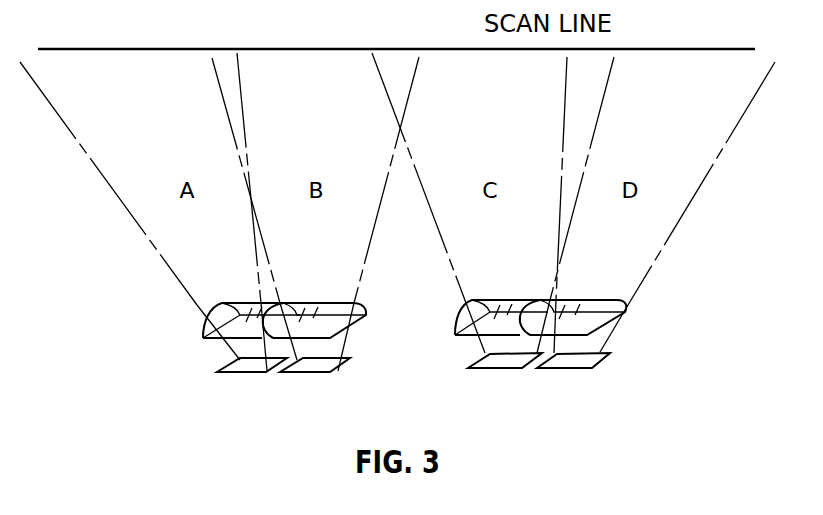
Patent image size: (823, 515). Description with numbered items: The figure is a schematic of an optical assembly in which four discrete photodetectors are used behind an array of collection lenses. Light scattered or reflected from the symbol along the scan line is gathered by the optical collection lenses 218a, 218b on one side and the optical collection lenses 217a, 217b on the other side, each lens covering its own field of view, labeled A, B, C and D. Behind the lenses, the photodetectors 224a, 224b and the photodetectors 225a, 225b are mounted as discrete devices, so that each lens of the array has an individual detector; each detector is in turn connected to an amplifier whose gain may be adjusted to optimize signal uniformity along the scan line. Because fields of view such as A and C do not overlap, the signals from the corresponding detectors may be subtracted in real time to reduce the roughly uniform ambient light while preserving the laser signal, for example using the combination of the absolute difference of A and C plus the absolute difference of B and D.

The optical collection lens 218a is at (203, 338).
The optical collection lens 218b is at (356, 338).
The photodetector 224a is at (230, 373).
The photodetector 224b is at (283, 372).
The optical collection lens 217a is at (458, 336).
The optical collection lens 217b is at (625, 337).
The photodetector 225a is at (512, 370).
The photodetector 225b is at (578, 368).